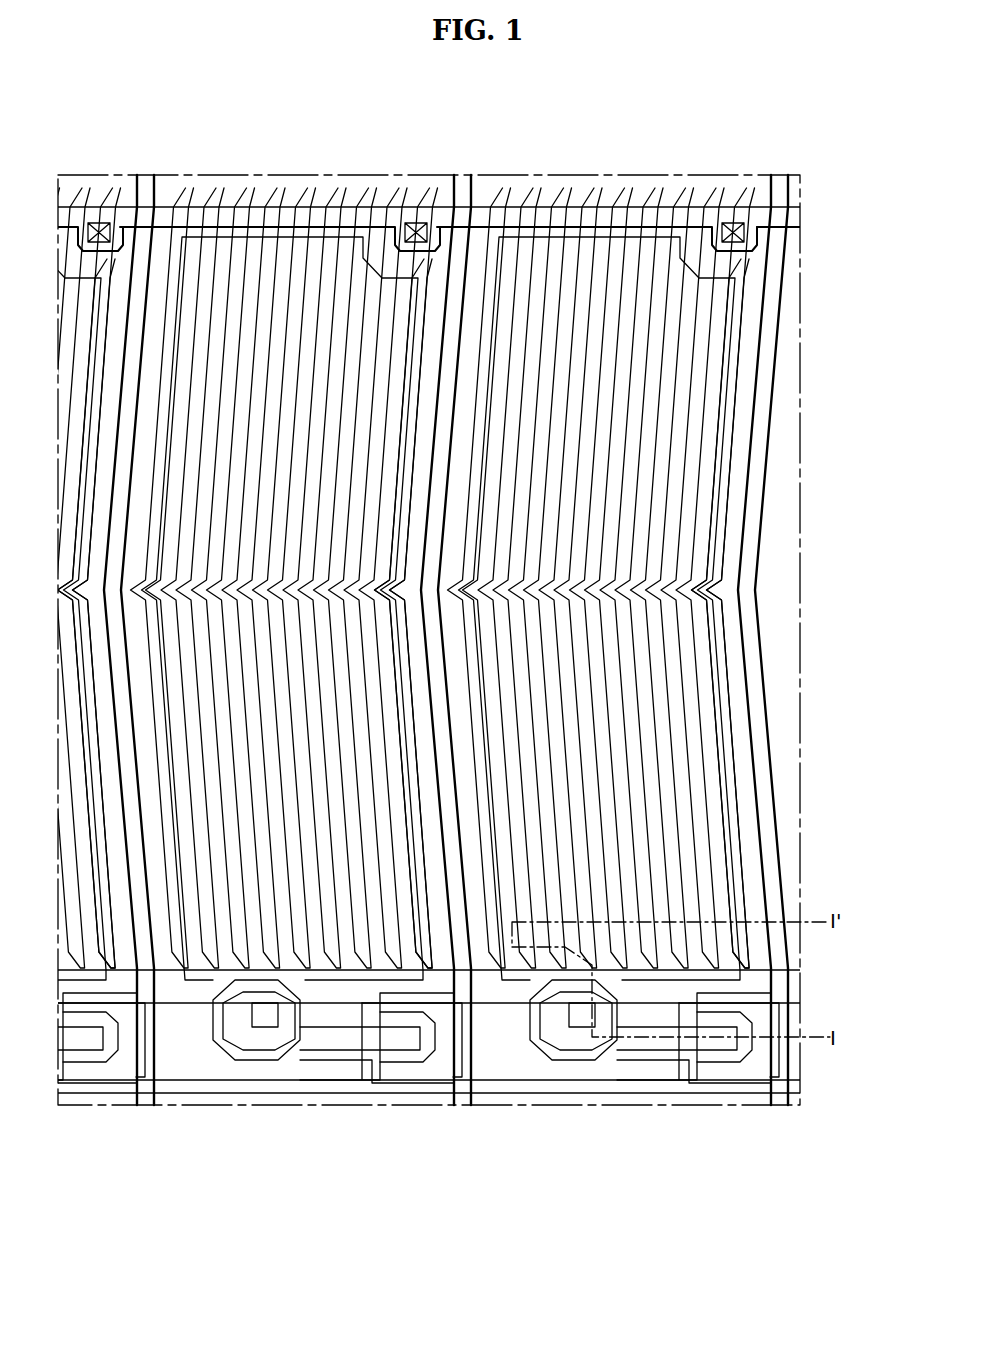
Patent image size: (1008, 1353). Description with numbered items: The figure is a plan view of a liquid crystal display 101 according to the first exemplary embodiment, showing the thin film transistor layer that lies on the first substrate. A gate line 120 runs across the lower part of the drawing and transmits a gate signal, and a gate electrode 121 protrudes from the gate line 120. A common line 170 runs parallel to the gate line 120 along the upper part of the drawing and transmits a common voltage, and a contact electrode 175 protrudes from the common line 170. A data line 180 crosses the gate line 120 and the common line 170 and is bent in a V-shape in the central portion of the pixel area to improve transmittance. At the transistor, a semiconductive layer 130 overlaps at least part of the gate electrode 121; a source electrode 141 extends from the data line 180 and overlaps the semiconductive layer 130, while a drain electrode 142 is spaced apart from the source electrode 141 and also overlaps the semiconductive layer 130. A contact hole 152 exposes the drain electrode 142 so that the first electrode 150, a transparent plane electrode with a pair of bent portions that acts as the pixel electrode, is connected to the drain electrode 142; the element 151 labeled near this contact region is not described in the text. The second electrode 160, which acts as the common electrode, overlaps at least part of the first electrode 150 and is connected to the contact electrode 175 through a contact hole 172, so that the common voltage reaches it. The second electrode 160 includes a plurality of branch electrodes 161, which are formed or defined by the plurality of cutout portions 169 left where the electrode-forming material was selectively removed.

The liquid crystal display 101 is at (131, 135).
The gate line 120 is at (499, 1093).
The gate electrode 121 is at (778, 1017).
The semiconductive layer 130 is at (732, 1058).
The source electrode 141 is at (707, 1073).
The drain electrode 142 is at (708, 1025).
The first electrode 150 is at (741, 805).
The gate electrode 151 is at (637, 1043).
The contact hole 152 is at (580, 1013).
The second electrode 160 is at (707, 252).
The branch electrodes 161 is at (683, 455).
The cutout portions 169 is at (668, 405).
The common line 170 is at (790, 216).
The contact hole 172 is at (733, 225).
The contact electrode 175 is at (760, 236).
The data line 180 is at (767, 352).